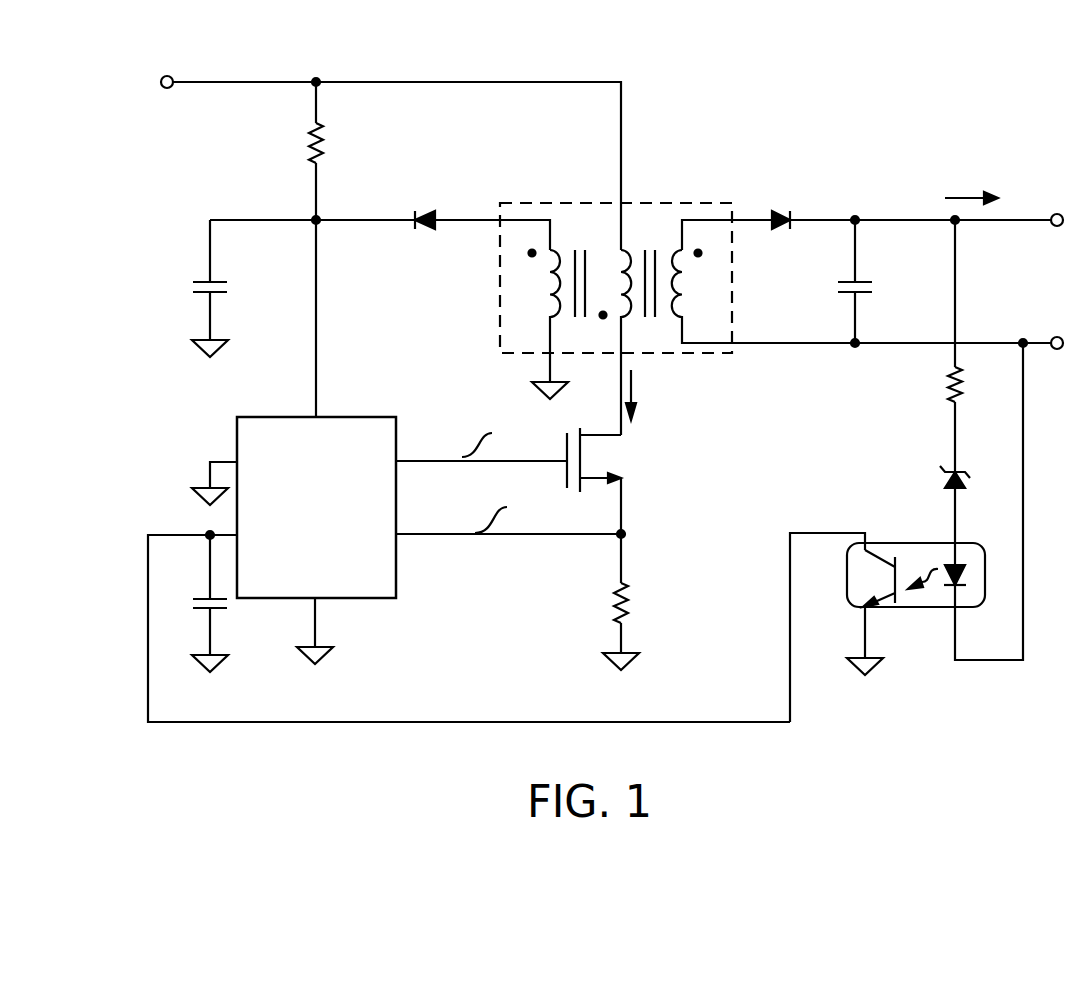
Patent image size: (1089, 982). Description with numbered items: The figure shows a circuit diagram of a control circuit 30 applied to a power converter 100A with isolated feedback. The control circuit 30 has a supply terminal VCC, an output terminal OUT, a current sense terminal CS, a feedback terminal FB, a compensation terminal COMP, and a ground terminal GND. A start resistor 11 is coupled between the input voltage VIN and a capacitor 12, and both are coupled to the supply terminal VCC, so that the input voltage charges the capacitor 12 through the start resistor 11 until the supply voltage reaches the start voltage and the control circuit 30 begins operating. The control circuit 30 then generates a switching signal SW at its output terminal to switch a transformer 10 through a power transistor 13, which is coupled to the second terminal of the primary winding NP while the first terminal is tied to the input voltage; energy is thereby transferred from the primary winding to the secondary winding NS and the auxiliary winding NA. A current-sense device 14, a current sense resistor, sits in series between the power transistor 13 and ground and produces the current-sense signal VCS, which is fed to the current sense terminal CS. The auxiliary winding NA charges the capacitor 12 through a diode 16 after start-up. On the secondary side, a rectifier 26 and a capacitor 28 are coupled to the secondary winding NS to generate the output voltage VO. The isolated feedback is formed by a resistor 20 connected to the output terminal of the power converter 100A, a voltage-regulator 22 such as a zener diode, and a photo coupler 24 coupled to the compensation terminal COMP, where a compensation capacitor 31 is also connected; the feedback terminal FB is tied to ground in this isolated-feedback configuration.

The power converter 100A is at (955, 69).
The transformer 10 is at (775, 306).
The start resistor 11 is at (332, 143).
The capacitor 12 is at (222, 288).
The power transistor 13 is at (610, 505).
The current-sense device 14 is at (633, 626).
The diode 16 is at (430, 208).
The resistor 20 is at (971, 384).
The voltage-regulator 22 is at (973, 478).
The photo coupler 24 is at (887, 618).
The rectifier 26 is at (911, 206).
The capacitor 28 is at (870, 281).
The control circuit 30 is at (316, 493).
The compensation capacitor 31 is at (195, 603).